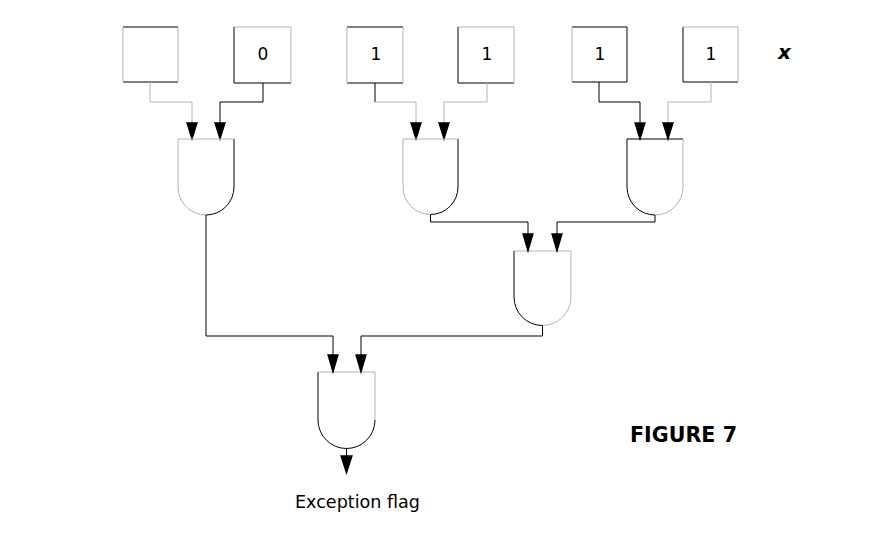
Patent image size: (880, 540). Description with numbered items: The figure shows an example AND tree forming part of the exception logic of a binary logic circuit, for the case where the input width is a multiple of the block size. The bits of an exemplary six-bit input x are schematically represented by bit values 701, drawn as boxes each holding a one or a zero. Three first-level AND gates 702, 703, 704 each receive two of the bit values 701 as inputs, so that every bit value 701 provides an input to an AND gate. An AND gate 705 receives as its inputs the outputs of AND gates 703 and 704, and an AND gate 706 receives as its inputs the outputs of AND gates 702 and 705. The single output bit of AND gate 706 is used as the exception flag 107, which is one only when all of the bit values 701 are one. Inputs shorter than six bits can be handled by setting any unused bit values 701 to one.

The bit values 701 is at (121, 55).
The AND gate 702 is at (234, 176).
The AND gate 703 is at (458, 176).
The AND gate 704 is at (683, 176).
The AND gate 705 is at (571, 288).
The AND gate 706 is at (318, 410).
The exception flag 107 is at (357, 456).